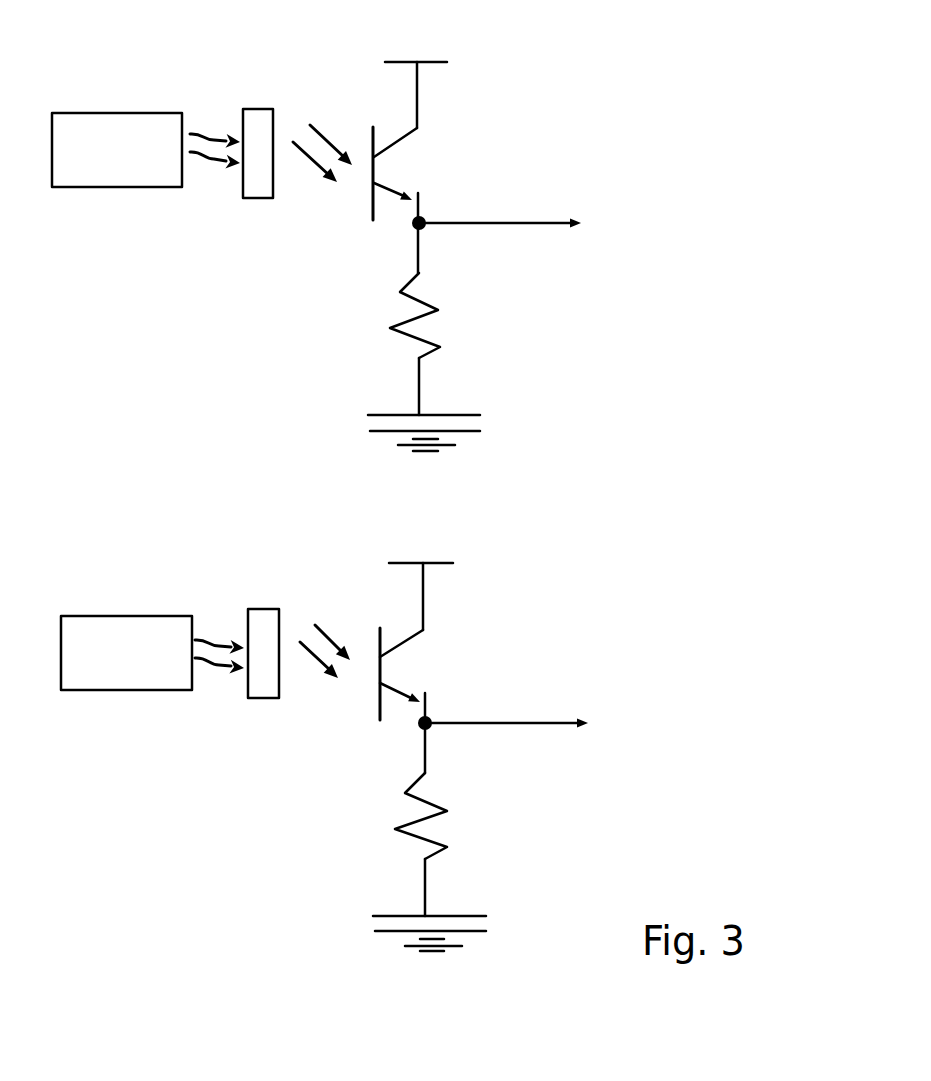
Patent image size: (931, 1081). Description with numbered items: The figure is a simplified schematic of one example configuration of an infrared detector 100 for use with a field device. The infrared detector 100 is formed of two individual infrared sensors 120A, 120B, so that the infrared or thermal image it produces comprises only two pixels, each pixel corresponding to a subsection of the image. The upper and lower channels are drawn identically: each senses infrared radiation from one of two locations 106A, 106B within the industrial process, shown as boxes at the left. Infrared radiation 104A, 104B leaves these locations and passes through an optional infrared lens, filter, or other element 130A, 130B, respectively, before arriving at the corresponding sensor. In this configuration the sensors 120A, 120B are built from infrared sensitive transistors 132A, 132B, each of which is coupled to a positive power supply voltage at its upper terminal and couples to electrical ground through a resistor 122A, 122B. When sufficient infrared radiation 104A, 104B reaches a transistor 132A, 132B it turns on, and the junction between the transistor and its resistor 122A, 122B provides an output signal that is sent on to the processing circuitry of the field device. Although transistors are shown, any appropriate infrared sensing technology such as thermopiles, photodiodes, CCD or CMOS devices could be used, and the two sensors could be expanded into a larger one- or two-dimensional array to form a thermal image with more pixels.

The infrared detector 100 is at (738, 145).
The infrared radiation 104A is at (203, 133).
The infrared radiation 104B is at (320, 663).
The location 106A is at (146, 161).
The location 106B is at (155, 664).
The infrared lens, filter, or other element 130A is at (259, 109).
The infrared lens, filter, or other element 130B is at (267, 609).
The infrared sensitive transistor 132A is at (374, 197).
The infrared sensitive transistor 132B is at (378, 697).
The infrared sensor 120A is at (467, 241).
The infrared sensor 120B is at (463, 741).
The resistor 122A is at (430, 303).
The resistor 122B is at (448, 823).